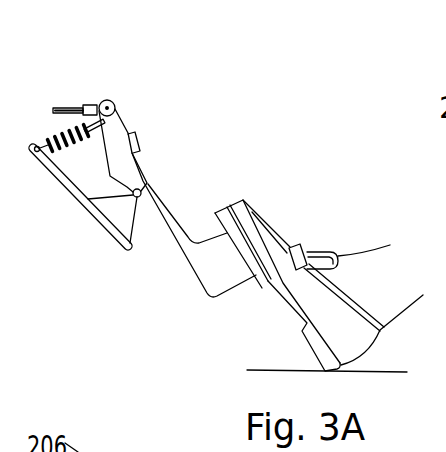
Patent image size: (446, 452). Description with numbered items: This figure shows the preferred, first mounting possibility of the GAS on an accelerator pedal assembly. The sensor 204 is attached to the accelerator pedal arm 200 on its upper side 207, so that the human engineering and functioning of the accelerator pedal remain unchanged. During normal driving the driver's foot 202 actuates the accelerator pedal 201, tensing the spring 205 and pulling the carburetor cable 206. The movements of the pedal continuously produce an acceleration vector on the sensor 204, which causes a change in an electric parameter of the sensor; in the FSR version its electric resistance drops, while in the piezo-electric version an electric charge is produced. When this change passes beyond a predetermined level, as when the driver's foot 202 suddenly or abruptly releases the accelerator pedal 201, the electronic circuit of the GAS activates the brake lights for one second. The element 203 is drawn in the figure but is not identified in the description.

The accelerator pedal arm 200 is at (167, 220).
The accelerator pedal 201 is at (262, 290).
The driver's foot 202 is at (283, 240).
The pedal plate 203 is at (148, 182).
The sensor 204 is at (138, 141).
The spring 205 is at (40, 147).
The carburetor cable 206 is at (72, 110).
The upper side 207 is at (117, 118).